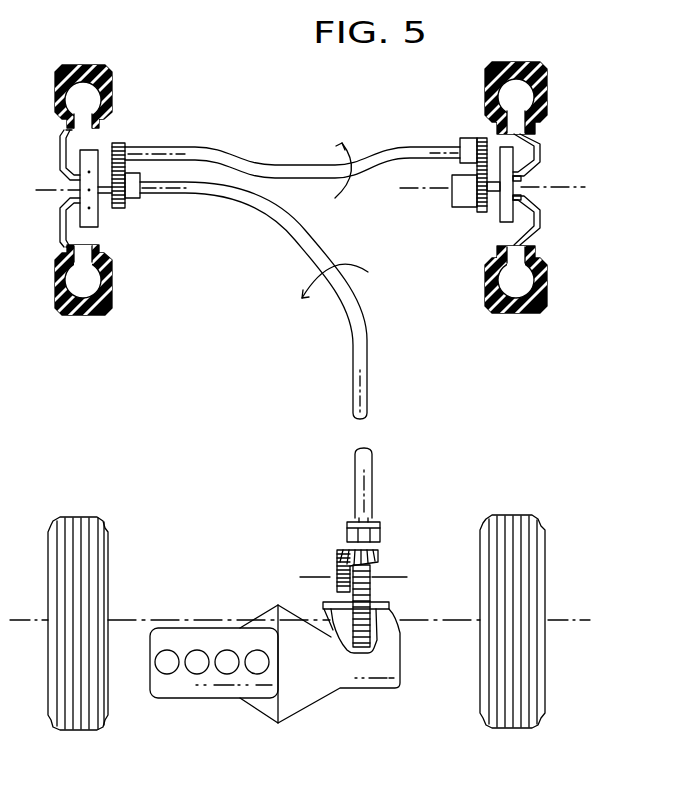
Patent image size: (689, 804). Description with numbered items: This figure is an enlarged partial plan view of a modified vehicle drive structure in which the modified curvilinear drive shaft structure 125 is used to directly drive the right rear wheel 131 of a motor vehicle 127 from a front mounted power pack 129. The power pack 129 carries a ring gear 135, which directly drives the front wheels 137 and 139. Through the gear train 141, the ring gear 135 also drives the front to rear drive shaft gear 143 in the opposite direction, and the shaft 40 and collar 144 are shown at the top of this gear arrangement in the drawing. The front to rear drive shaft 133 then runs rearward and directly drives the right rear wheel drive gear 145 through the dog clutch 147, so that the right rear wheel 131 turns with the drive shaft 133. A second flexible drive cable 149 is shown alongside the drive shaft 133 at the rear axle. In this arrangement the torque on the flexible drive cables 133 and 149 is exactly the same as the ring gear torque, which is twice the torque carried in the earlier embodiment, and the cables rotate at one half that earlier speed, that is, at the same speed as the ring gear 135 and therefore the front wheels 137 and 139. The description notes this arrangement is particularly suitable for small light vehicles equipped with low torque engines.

The steering shaft 40 is at (373, 522).
The curvilinear drive shaft structure 125 is at (300, 440).
The motor vehicle 127 is at (386, 719).
The front mounted power pack 129 is at (215, 699).
The right rear wheel 131 is at (75, 317).
The front to rear drive shaft 133 is at (345, 328).
The ring gear 135 is at (372, 638).
The front wheel 137 is at (88, 731).
The front wheel 139 is at (518, 729).
The gear train 141 is at (372, 585).
The front to rear drive shaft gear 143 is at (380, 556).
The collar 144 is at (347, 530).
The right rear wheel drive gear 145 is at (120, 209).
The dog clutch 147 is at (132, 200).
The flexible drive cable 149 is at (266, 160).